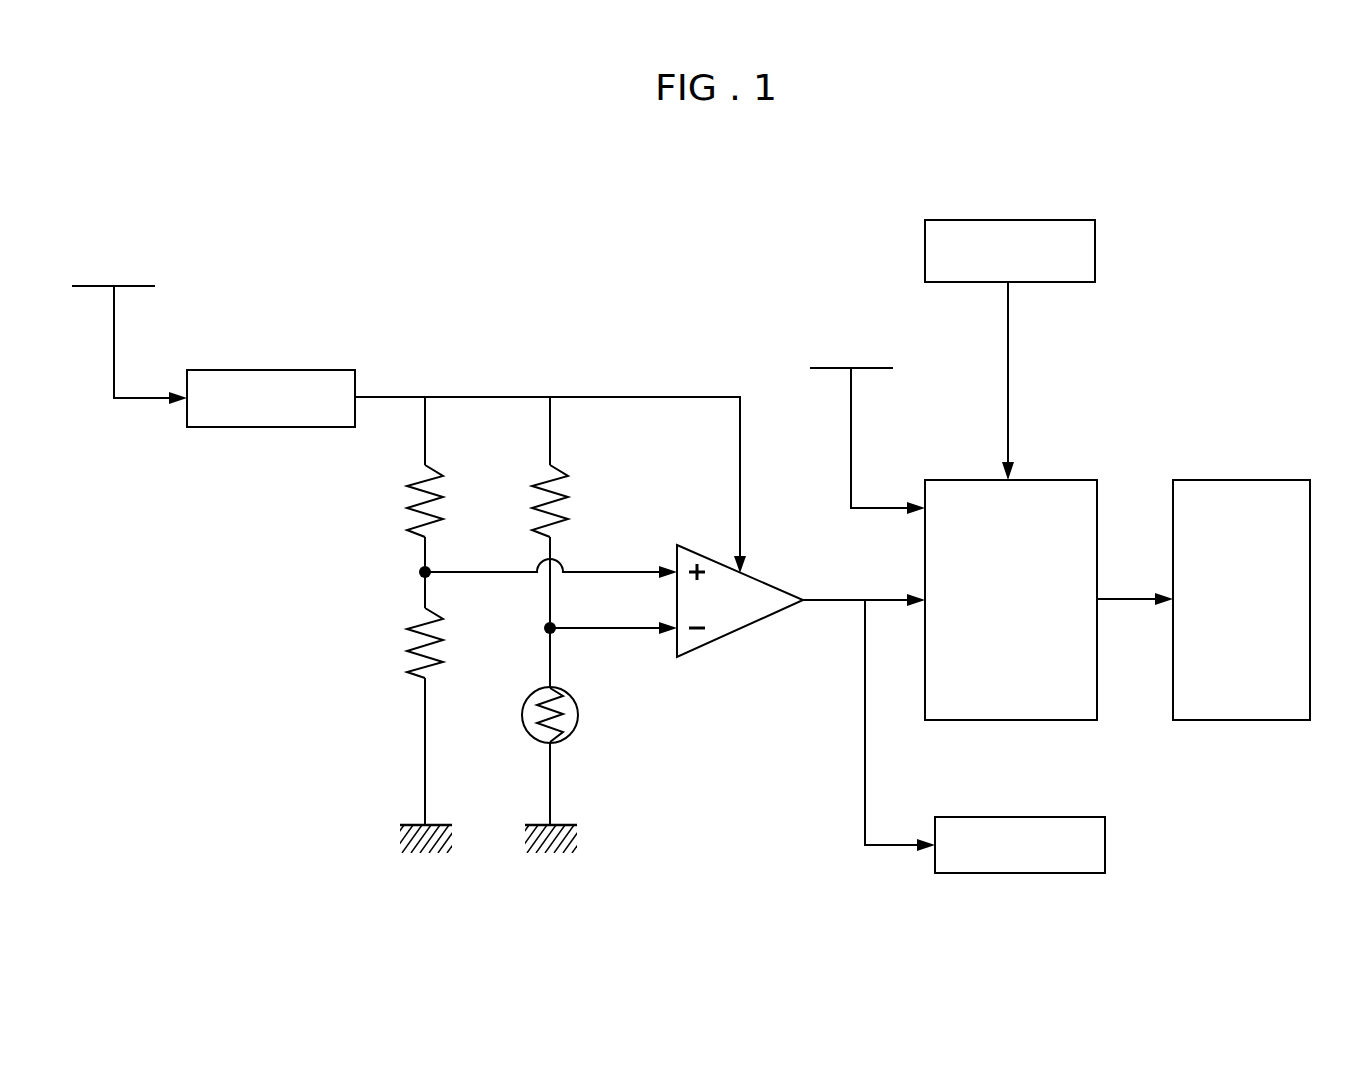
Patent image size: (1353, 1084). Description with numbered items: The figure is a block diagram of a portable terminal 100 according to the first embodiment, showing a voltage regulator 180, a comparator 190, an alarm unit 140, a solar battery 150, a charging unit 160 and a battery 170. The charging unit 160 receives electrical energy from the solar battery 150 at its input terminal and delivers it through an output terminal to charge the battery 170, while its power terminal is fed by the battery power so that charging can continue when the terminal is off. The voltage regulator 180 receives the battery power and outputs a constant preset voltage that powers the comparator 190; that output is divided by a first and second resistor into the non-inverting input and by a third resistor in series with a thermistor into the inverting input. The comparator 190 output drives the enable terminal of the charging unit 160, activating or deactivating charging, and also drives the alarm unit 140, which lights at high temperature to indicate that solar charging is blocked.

The portable terminal 100 is at (1251, 176).
The alarm unit 140 is at (1068, 817).
The solar battery 150 is at (1055, 220).
The charging unit 160 is at (1067, 480).
The battery 170 is at (1273, 480).
The voltage regulator 180 is at (311, 370).
The comparator 190 is at (719, 641).